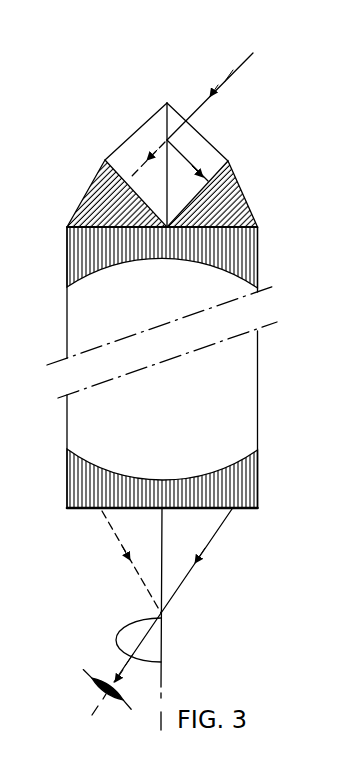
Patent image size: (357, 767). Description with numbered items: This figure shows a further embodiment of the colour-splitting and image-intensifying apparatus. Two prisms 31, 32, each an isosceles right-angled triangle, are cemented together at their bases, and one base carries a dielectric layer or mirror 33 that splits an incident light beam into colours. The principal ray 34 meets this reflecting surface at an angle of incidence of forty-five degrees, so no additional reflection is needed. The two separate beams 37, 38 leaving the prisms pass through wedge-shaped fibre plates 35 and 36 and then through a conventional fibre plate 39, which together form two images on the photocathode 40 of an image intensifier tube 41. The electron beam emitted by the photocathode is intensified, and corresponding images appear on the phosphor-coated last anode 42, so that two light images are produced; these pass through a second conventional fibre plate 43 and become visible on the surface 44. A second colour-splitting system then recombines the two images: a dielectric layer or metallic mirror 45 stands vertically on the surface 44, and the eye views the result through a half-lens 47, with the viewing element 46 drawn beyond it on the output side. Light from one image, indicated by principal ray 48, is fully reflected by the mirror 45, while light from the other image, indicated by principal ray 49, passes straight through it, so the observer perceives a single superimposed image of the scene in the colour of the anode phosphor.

The prism 31 is at (140, 133).
The prism 32 is at (206, 153).
The dielectric layer or mirror 33 is at (172, 116).
The principal ray 34 is at (224, 96).
The wedge-shaped fibre plate 35 is at (102, 198).
The wedge-shaped fibre plate 36 is at (241, 212).
The separate beam 37 is at (132, 172).
The separate beam 38 is at (227, 165).
The conventional fibre plate 39 is at (254, 259).
The photocathode 40 is at (161, 259).
The image intensifier tube 41 is at (67, 323).
The last anode 42 is at (138, 476).
The conventional fibre plate 43 is at (251, 476).
The surface 44 is at (243, 511).
The dielectric layer or metallic mirror 45 is at (164, 561).
The detector lens 46 is at (84, 677).
The half-lens 47 is at (121, 626).
The principal ray 48 is at (123, 547).
The principal ray 49 is at (205, 552).